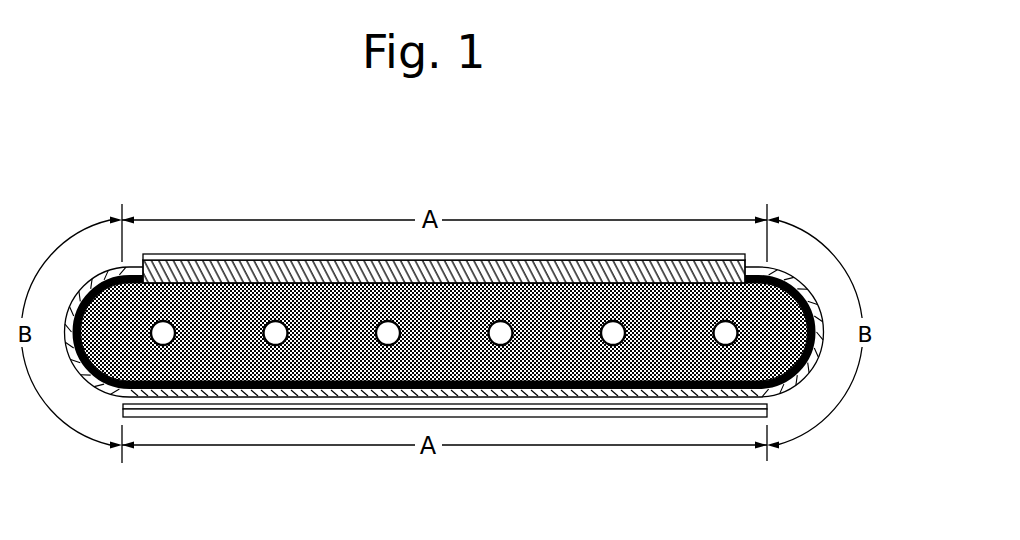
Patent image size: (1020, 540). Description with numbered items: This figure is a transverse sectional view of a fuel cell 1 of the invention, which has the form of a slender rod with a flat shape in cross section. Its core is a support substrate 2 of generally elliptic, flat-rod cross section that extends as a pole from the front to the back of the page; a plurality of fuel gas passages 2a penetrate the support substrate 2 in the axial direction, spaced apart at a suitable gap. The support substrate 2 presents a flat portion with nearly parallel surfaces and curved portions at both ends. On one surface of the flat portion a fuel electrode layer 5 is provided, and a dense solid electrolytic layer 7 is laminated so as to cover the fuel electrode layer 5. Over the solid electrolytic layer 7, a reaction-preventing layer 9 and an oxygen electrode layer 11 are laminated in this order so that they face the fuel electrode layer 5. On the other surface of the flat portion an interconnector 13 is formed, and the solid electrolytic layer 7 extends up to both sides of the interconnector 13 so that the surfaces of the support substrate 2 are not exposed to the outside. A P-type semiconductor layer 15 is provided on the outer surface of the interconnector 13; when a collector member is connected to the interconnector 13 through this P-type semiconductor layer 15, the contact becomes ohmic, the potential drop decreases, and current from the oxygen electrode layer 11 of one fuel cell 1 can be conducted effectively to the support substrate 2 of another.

The fuel cell 1 is at (638, 207).
The support substrate 2 is at (330, 370).
The fuel gas passages 2a is at (275, 330).
The fuel electrode layer 5 is at (530, 378).
The solid electrolytic layer 7 is at (818, 309).
The reaction-preventing layer 9 is at (628, 402).
The oxygen electrode layer 11 is at (211, 412).
The interconnector 13 is at (500, 262).
The P-type semiconductor layer 15 is at (331, 254).